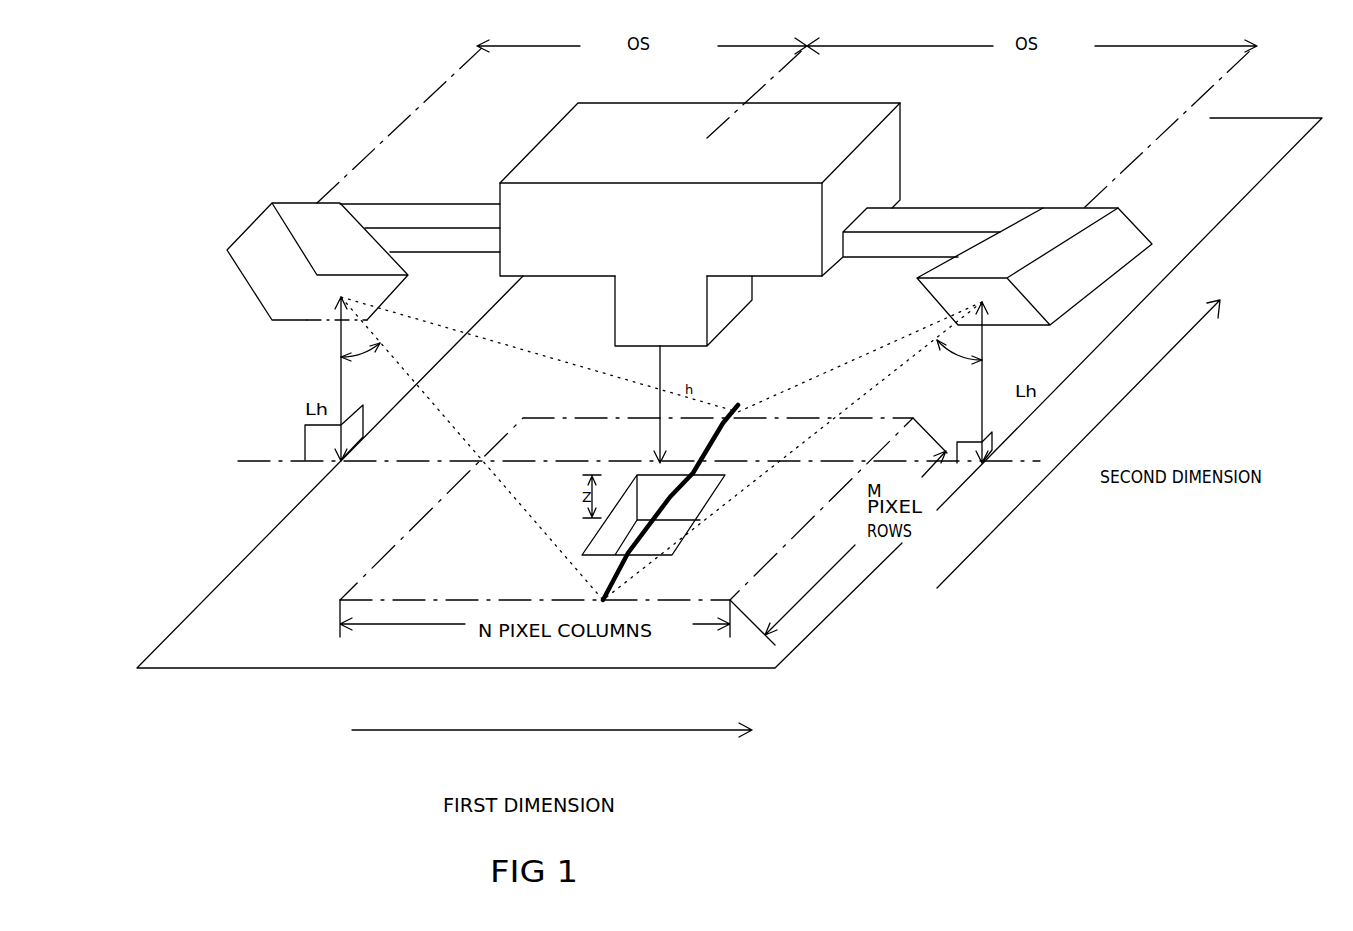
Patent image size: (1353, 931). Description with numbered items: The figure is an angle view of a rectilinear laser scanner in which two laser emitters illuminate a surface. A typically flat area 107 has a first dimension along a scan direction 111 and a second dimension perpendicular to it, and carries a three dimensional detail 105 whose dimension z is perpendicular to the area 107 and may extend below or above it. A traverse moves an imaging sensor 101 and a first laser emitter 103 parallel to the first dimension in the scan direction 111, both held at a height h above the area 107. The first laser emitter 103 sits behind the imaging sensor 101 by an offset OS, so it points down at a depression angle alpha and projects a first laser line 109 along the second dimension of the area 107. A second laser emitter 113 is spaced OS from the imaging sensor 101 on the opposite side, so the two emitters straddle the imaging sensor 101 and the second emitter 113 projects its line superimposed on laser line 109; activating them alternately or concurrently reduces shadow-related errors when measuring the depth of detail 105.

The imaging sensor 101 is at (729, 224).
The first laser emitter 103 is at (877, 404).
The three dimensional detail 105 is at (700, 527).
The area 107 is at (845, 608).
The first laser line 109 is at (740, 407).
The scan direction 111 is at (552, 746).
The second laser emitter 113 is at (482, 401).